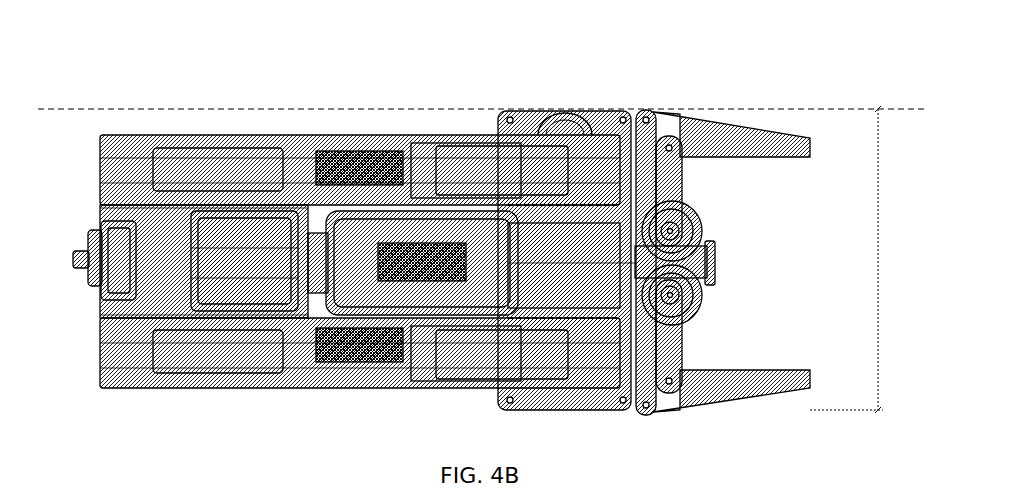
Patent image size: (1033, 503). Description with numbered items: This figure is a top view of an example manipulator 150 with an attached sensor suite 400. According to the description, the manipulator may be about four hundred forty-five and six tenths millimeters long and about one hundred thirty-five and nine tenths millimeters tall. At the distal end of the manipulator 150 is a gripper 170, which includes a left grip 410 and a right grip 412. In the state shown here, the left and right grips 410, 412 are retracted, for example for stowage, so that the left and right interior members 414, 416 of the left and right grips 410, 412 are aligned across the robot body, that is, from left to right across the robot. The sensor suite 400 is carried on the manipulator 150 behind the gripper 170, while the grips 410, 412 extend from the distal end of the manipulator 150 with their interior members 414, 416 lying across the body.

The manipulator 150 is at (548, 60).
The gripper 170 is at (763, 91).
The sensor suite 400 is at (253, 215).
The left grip 410 is at (725, 148).
The right grip 412 is at (725, 361).
The left interior member 414 is at (672, 172).
The right interior member 416 is at (673, 331).